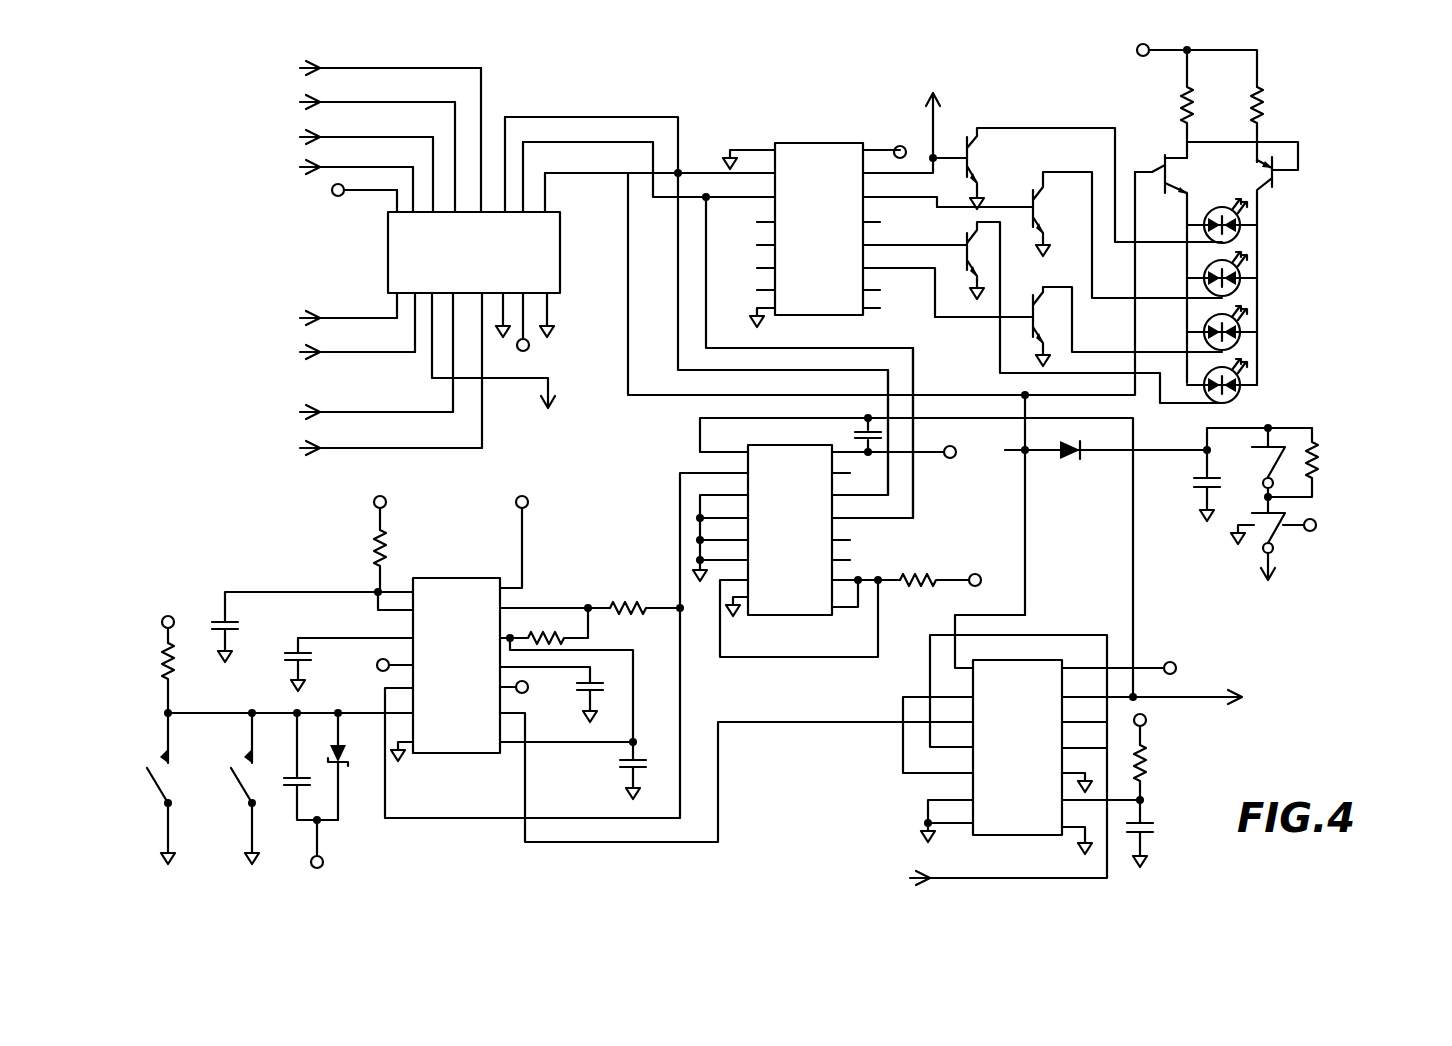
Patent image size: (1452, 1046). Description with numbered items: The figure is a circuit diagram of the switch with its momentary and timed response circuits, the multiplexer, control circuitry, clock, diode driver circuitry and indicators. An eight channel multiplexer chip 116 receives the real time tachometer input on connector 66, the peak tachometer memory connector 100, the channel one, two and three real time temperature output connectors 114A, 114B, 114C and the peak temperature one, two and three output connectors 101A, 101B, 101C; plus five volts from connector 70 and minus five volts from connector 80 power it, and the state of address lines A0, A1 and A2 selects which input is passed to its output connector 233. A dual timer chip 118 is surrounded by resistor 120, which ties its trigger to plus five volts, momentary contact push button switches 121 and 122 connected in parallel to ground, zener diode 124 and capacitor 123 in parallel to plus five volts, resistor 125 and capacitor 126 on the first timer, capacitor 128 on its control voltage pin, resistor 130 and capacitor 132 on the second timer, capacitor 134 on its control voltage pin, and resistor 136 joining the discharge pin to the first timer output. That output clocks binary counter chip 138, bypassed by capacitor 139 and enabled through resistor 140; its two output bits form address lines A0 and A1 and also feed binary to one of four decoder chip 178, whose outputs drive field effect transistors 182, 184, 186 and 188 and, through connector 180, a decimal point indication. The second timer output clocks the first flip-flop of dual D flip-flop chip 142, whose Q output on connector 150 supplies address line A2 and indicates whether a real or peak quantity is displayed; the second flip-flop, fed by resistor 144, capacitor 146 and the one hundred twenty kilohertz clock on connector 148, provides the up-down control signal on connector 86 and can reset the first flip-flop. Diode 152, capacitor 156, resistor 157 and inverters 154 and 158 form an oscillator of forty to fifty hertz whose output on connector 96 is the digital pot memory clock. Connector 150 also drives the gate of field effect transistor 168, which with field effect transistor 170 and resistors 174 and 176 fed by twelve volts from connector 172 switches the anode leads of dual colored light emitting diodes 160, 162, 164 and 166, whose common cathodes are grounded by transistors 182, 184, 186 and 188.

The real time tachometer input connector 66 is at (355, 103).
The plus 5 volt connector 70 is at (1325, 516).
The minus 5 volt connector 80 is at (530, 345).
The up-down control signal connector 86 is at (1267, 709).
The digital pot memory clock connector 96 is at (1275, 590).
The peak tachometer memory connector 100 is at (320, 319).
The peak temperature one output connector 101A is at (362, 449).
The peak temperature two output connector 101B is at (329, 353).
The peak temperature three output connector 101C is at (348, 413).
The channel one real time temperature output connector 114A is at (338, 138).
The channel two real time temperature output connector 114B is at (328, 168).
The channel three real time temperature output connector 114C is at (362, 69).
The eight channel multiplexer chip 116 is at (493, 268).
The timer chip 118 is at (475, 675).
The resistor 120 is at (162, 660).
The momentary contact spring loaded push button switch 121 is at (155, 787).
The momentary contact spring loaded push button switch 122 is at (240, 787).
The capacitor 123 is at (285, 777).
The zener diode 124 is at (350, 758).
The resistor 125 is at (376, 543).
The capacitor 126 is at (241, 632).
The capacitor 128 is at (282, 662).
The resistor 130 is at (535, 639).
The capacitor 132 is at (620, 767).
The capacitor 134 is at (581, 708).
The resistor 136 is at (620, 602).
The binary counter chip 138 is at (808, 540).
The capacitor 139 is at (850, 433).
The resistor 140 is at (918, 580).
The dual D flip-flop chip 142 is at (1035, 757).
The resistor 144 is at (1147, 764).
The capacitor 146 is at (1155, 828).
The 120 kilohertz clock connector 148 is at (986, 887).
The connector 150 is at (1025, 570).
The diode 152 is at (1070, 462).
The first invertor 154 is at (1278, 425).
The capacitor 156 is at (1190, 482).
The resistor 157 is at (1318, 468).
The second invertor 158 is at (1264, 552).
The dual colored light emitting diode 160 is at (1243, 225).
The dual colored light emitting diode 162 is at (1243, 278).
The dual colored light emitting diode 164 is at (1243, 332).
The dual colored light emitting diode 166 is at (1243, 385).
The field effect transistor 168 is at (1164, 161).
The field effect transistor 170 is at (1286, 178).
The connector 172 is at (1138, 57).
The resistor 174 is at (1182, 108).
The resistor 176 is at (1263, 108).
The binary to one of four decoder demultiplexer chip 178 is at (838, 240).
The connector 180 is at (948, 96).
The field effect transistor 182 is at (980, 166).
The field effect transistor 184 is at (1046, 214).
The field effect transistor 186 is at (962, 238).
The field effect transistor 188 is at (1042, 294).
The connector 233 is at (498, 406).
The address line A0 is at (626, 114).
The address line A1 is at (626, 142).
The address line A2 is at (626, 174).